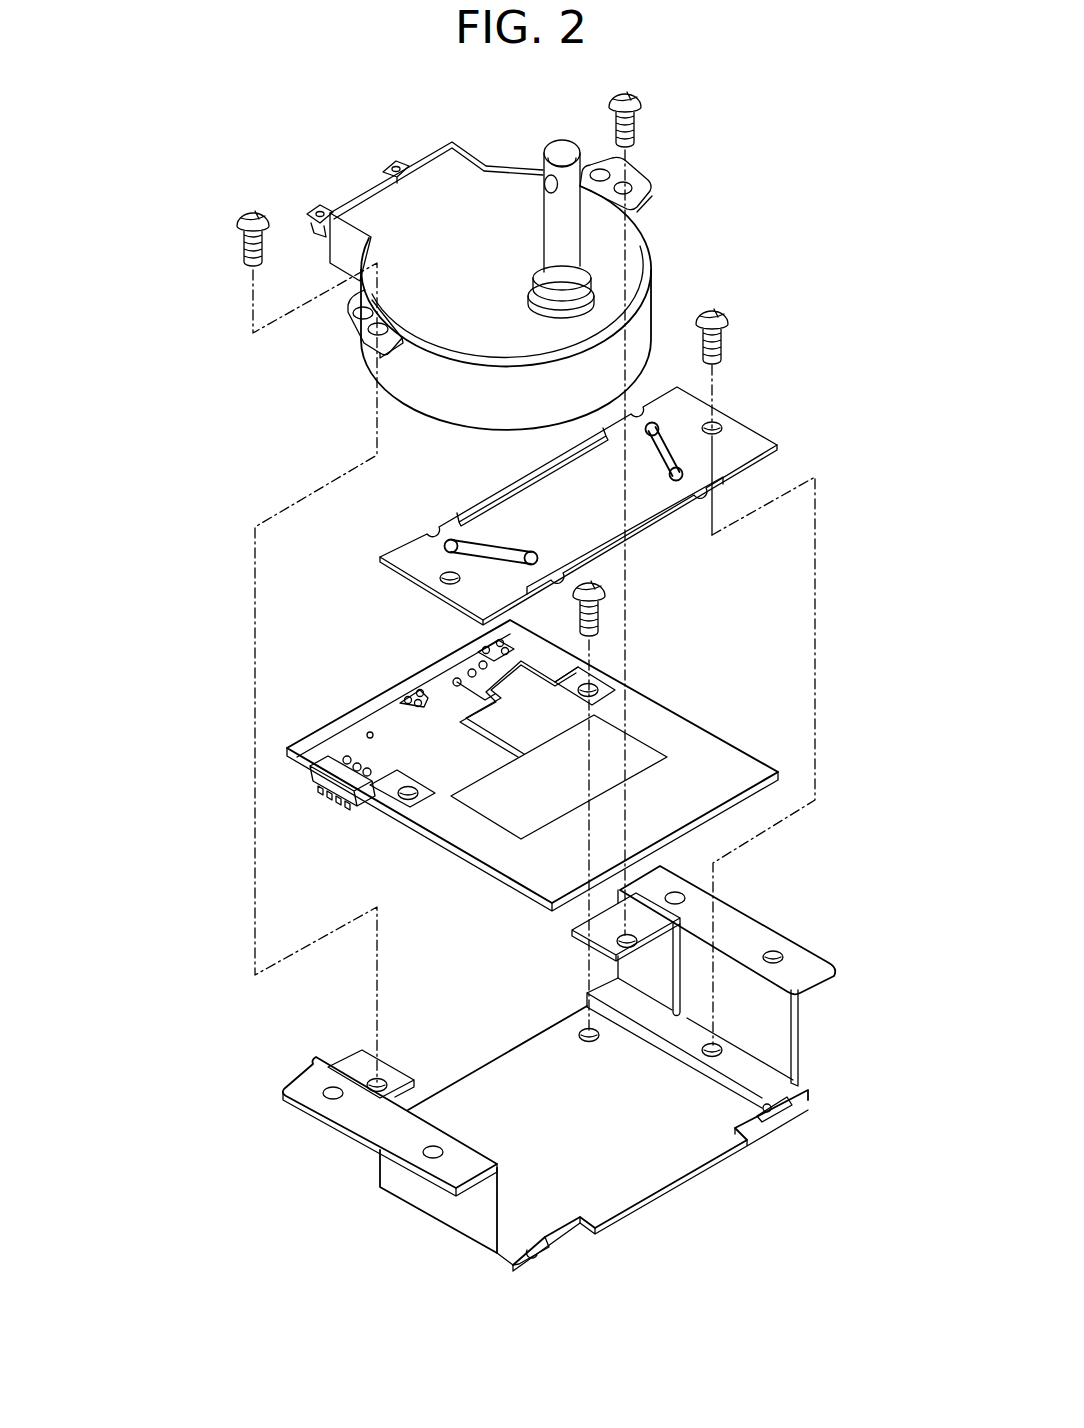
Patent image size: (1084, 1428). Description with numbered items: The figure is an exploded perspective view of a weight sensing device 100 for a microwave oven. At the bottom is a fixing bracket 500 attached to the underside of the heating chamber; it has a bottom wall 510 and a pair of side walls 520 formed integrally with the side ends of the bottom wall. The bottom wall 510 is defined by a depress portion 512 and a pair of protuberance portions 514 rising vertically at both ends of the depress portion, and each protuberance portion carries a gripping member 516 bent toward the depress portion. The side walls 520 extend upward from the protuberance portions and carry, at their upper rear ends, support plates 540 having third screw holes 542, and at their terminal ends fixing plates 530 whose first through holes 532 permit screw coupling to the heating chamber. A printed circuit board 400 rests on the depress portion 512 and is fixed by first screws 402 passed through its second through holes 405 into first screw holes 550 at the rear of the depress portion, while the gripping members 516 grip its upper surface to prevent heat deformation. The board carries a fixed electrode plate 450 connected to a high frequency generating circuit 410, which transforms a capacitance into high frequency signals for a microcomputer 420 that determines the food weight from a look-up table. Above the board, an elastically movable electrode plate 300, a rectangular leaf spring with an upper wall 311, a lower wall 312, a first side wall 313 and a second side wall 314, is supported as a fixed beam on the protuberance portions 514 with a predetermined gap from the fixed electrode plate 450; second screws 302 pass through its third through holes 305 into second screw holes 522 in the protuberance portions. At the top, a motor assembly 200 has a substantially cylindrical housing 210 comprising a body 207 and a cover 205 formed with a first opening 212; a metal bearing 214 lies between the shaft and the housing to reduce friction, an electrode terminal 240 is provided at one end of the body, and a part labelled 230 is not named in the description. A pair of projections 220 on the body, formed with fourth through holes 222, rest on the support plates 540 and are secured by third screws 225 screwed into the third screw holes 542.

The weight sensing device 100 is at (174, 673).
The motor assembly 200 is at (268, 403).
The cover 205 is at (640, 258).
The body 207 is at (645, 322).
The housing 210 is at (793, 238).
The first opening 212 is at (530, 308).
The metal bearing 214 is at (536, 283).
The projections 220 is at (648, 180).
The fourth through holes 222 is at (634, 190).
The third screws 225 is at (642, 108).
The output shaft 230 is at (540, 225).
The electrode terminal 240 is at (312, 213).
The elastically movable electrode plate 300 is at (392, 587).
The second screws 302 is at (726, 322).
The third through holes 305 is at (718, 424).
The upper wall 311 is at (648, 530).
The lower wall 312 is at (522, 470).
The first side wall 313 is at (445, 598).
The second side wall 314 is at (755, 420).
The printed circuit board 400 is at (448, 868).
The first screws 402 is at (630, 597).
The second through holes 405 is at (600, 680).
The high frequency generating circuit 410 is at (455, 680).
The microcomputer 420 is at (338, 792).
The fixed electrode plate 450 is at (605, 735).
The fixing bracket 500 is at (305, 1148).
The bottom wall 510 is at (864, 1166).
The depress portion 512 is at (634, 1167).
The protuberance portions 514 is at (792, 1092).
The gripping member 516 is at (757, 1110).
The side walls 520 is at (757, 1004).
The second screw holes 522 is at (725, 1047).
The fixing plates 530 is at (747, 925).
The first through hole 532 is at (778, 955).
The support plates 540 is at (592, 947).
The third screw holes 542 is at (615, 938).
The first screw holes 550 is at (577, 1030).